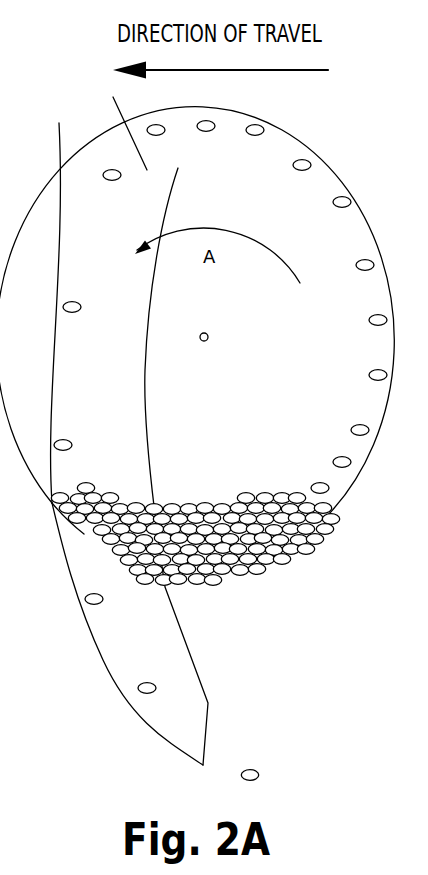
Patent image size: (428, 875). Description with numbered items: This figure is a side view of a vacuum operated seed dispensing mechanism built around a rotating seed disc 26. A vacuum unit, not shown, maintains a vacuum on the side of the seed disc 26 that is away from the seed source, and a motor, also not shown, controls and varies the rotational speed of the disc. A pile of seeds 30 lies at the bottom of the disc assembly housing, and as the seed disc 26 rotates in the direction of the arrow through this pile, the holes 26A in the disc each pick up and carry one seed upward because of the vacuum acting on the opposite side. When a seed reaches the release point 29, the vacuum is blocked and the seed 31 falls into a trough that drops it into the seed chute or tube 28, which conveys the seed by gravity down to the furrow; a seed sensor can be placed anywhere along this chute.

The seed disc 26 is at (335, 171).
The holes 26A is at (366, 261).
The seed chute or tube 28 is at (183, 643).
The release point 29 is at (110, 143).
The seed 30 is at (311, 553).
The seed 31 is at (255, 768).